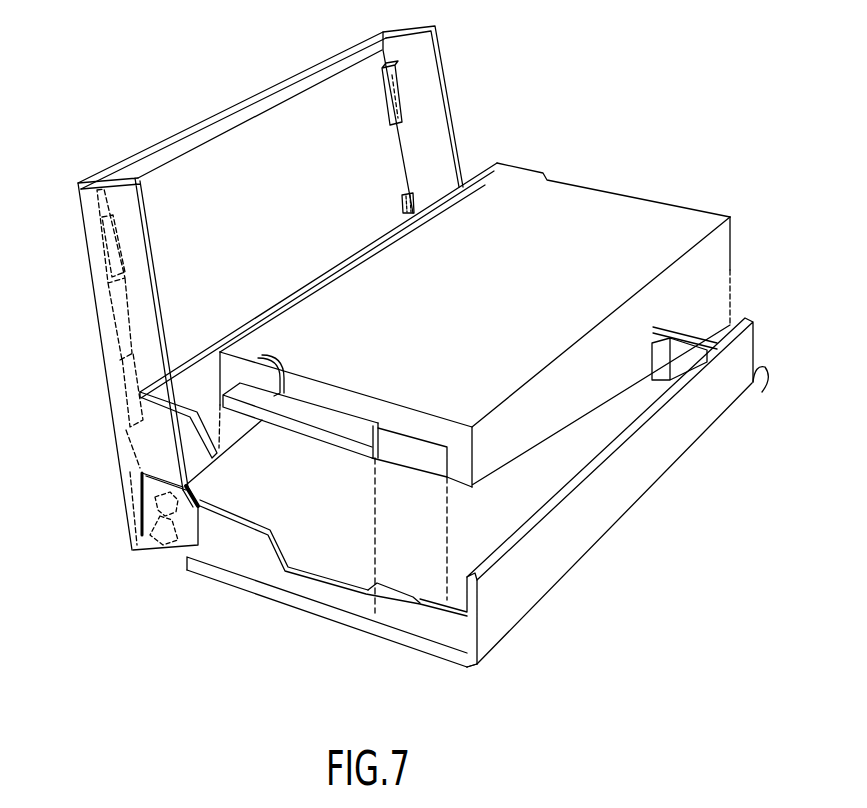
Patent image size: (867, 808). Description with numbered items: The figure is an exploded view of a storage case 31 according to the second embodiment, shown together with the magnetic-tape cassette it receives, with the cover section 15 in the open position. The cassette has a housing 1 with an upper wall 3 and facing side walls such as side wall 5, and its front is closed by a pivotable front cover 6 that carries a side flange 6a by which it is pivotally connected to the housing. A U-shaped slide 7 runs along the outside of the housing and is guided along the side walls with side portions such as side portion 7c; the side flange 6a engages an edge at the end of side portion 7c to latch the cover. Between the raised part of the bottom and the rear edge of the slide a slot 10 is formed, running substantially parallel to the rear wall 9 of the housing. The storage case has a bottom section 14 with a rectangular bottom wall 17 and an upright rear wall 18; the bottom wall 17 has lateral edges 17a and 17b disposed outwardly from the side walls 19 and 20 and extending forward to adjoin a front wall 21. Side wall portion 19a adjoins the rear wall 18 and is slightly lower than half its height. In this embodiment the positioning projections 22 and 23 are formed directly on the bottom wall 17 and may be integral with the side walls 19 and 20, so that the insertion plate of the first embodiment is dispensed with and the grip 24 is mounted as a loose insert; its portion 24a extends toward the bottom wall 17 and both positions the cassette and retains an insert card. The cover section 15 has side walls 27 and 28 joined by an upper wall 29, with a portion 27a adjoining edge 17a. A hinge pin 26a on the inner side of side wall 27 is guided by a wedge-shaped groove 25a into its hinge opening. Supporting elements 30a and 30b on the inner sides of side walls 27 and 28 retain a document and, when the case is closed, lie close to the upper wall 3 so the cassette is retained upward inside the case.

The housing 1 is at (620, 180).
The upper wall 3 is at (570, 230).
The side wall 5 is at (415, 420).
The front cover 6 is at (320, 268).
The side flange 6a is at (257, 370).
The U-shaped slide 7 is at (298, 413).
The side portion 7c is at (355, 433).
The rear wall 9 is at (547, 409).
The slot 10 is at (423, 457).
The bottom section 14 is at (477, 509).
The cover section 15 is at (279, 320).
The bottom wall 17 is at (318, 547).
The lateral edge 17a is at (443, 647).
The lateral edge 17b is at (760, 367).
The rear wall 18 is at (660, 467).
The side wall 19 is at (268, 552).
The side wall portion 19a is at (343, 595).
The side wall 20 is at (693, 337).
The front wall 21 is at (198, 473).
The projection 22 is at (393, 594).
The projection 23 is at (677, 347).
The grip 24 is at (197, 377).
The portion of grip 24a is at (228, 430).
The wedge-shaped groove 25a is at (148, 538).
The hinge pin 26a is at (145, 508).
The side wall of cover section 27 is at (108, 333).
The portion of side wall 27a is at (188, 557).
The side wall of cover section 28 is at (433, 110).
The upper wall of cover section 29 is at (213, 117).
The supporting element 30a is at (117, 245).
The supporting element 30b is at (400, 95).
The storage case 31 is at (614, 540).